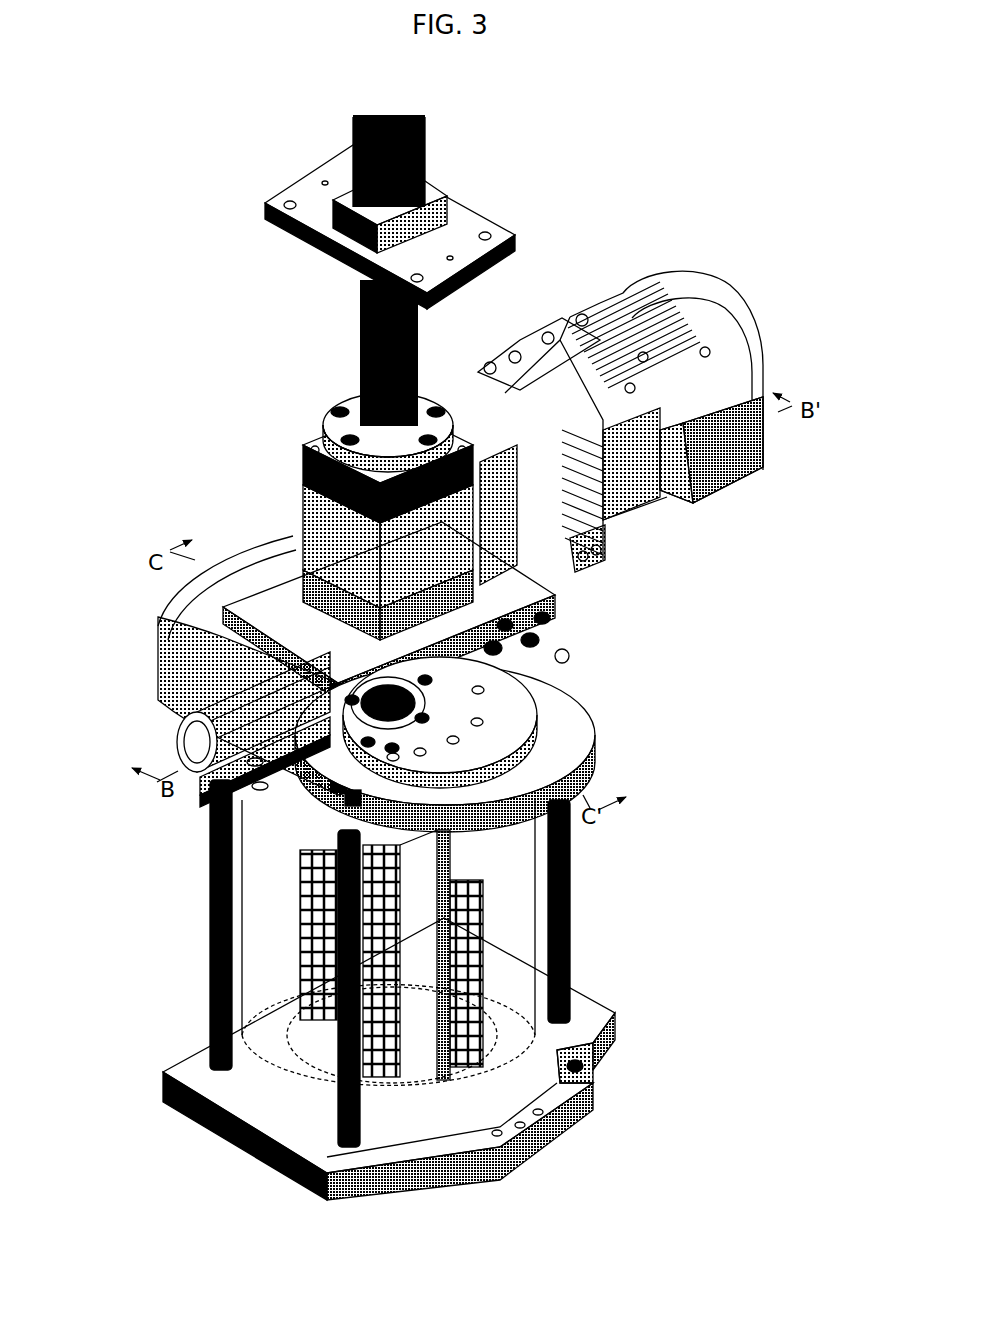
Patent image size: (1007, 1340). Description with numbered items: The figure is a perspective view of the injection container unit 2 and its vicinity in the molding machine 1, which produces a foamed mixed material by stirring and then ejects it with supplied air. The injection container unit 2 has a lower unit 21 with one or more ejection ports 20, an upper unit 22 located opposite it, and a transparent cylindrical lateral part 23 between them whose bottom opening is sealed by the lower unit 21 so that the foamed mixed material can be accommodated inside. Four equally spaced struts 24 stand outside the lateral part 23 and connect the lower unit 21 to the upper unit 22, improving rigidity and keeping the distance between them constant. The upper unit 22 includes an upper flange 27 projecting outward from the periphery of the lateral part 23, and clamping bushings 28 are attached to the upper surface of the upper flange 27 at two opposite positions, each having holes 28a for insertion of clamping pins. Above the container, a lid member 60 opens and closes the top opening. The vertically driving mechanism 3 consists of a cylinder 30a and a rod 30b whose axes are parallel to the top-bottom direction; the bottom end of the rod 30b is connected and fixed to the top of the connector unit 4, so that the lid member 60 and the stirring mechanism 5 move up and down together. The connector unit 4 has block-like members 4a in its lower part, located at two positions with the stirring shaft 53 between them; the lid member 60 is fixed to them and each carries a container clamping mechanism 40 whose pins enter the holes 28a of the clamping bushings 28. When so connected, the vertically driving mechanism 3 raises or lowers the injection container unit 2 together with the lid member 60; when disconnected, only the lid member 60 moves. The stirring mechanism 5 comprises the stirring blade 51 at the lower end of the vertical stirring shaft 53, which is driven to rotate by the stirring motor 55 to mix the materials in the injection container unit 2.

The molding machine 1 is at (745, 142).
The injection container unit 2 is at (70, 760).
The vertically driving mechanism 3 is at (646, 132).
The connector unit 4 is at (102, 664).
The block-like member 4a is at (236, 664).
The stirring mechanism 5 is at (826, 604).
The ejection port 20 is at (296, 1020).
The lower unit 21 is at (152, 1078).
The upper unit 22 is at (112, 806).
The lateral part 23 is at (242, 945).
The strut 24 is at (212, 905).
The upper flange 27 is at (255, 800).
The clamping bushing 28 is at (258, 787).
The hole 28a is at (262, 770).
The cylinder 30a is at (410, 193).
The rod 30b is at (412, 353).
The container clamping mechanism 40 is at (160, 713).
The stirring blade 51 is at (498, 905).
The stirring shaft 53 is at (420, 712).
The stirring motor 55 is at (740, 478).
The lid member 60 is at (520, 697).